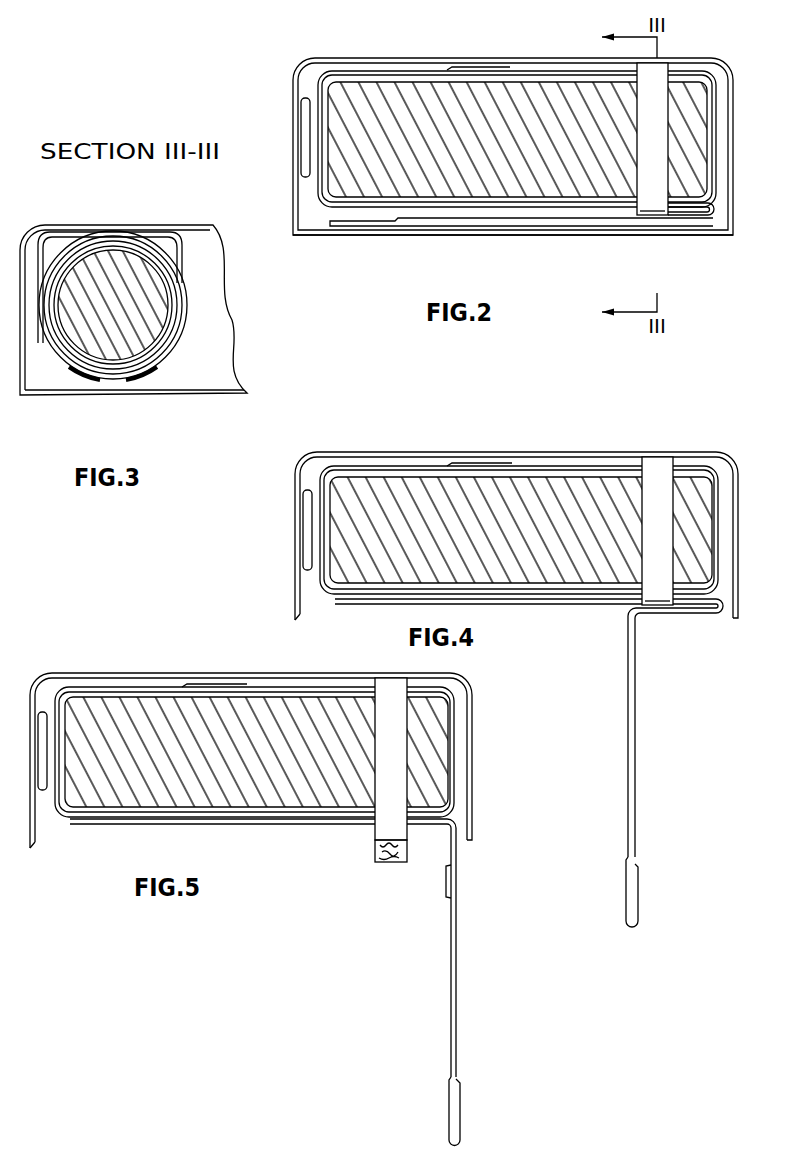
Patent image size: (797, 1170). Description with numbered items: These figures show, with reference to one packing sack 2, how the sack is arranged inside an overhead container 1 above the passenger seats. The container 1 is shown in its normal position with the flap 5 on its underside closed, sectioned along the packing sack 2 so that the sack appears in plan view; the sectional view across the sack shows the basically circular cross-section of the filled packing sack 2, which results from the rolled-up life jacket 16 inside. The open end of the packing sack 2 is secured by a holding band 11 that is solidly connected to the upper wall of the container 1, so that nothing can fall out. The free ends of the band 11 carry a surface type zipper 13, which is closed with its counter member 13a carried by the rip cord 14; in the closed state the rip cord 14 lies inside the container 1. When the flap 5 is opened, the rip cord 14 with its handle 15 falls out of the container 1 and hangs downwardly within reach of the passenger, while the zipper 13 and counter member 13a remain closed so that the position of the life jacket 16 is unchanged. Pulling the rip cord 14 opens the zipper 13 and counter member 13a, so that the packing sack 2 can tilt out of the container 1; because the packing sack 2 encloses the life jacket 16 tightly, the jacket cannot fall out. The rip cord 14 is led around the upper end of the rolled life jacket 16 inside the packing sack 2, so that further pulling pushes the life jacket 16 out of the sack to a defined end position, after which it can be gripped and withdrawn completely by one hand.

In FIG. 2, the container 1 is at (500, 46).
In FIG. 3, the container 1 is at (173, 213).
In FIG. 4, the container 1 is at (350, 440).
In FIG. 5, the container 1 is at (102, 660).
In FIG. 3, the packing sack 2 is at (176, 267).
In FIG. 4, the packing sack 2 is at (565, 468).
In FIG. 5, the packing sack 2 is at (287, 686).
In FIG. 2, the flap 5 is at (438, 234).
In FIG. 3, the flap 5 is at (209, 396).
In FIG. 2, the holding band 11 is at (643, 136).
In FIG. 3, the holding band 11 is at (191, 292).
In FIG. 4, the holding band 11 is at (648, 538).
In FIG. 2, the surface type zipper 13 is at (672, 216).
In FIG. 3, the surface type zipper 13 is at (187, 363).
In FIG. 4, the surface type zipper 13 is at (636, 610).
In FIG. 5, the surface type zipper 13 is at (375, 849).
In FIG. 2, the zipper counter member 13a is at (669, 217).
In FIG. 3, the zipper counter member 13a is at (158, 369).
In FIG. 4, the zipper counter member 13a is at (653, 616).
In FIG. 5, the zipper counter member 13a is at (447, 883).
In FIG. 2, the rip cord 14 is at (396, 70).
In FIG. 3, the rip cord 14 is at (109, 247).
In FIG. 4, the rip cord 14 is at (637, 681).
In FIG. 5, the rip cord 14 is at (458, 1014).
In FIG. 4, the handle 15 is at (639, 891).
In FIG. 5, the handle 15 is at (462, 1114).
In FIG. 2, the life jacket 16 is at (480, 192).
In FIG. 4, the life jacket 16 is at (490, 577).